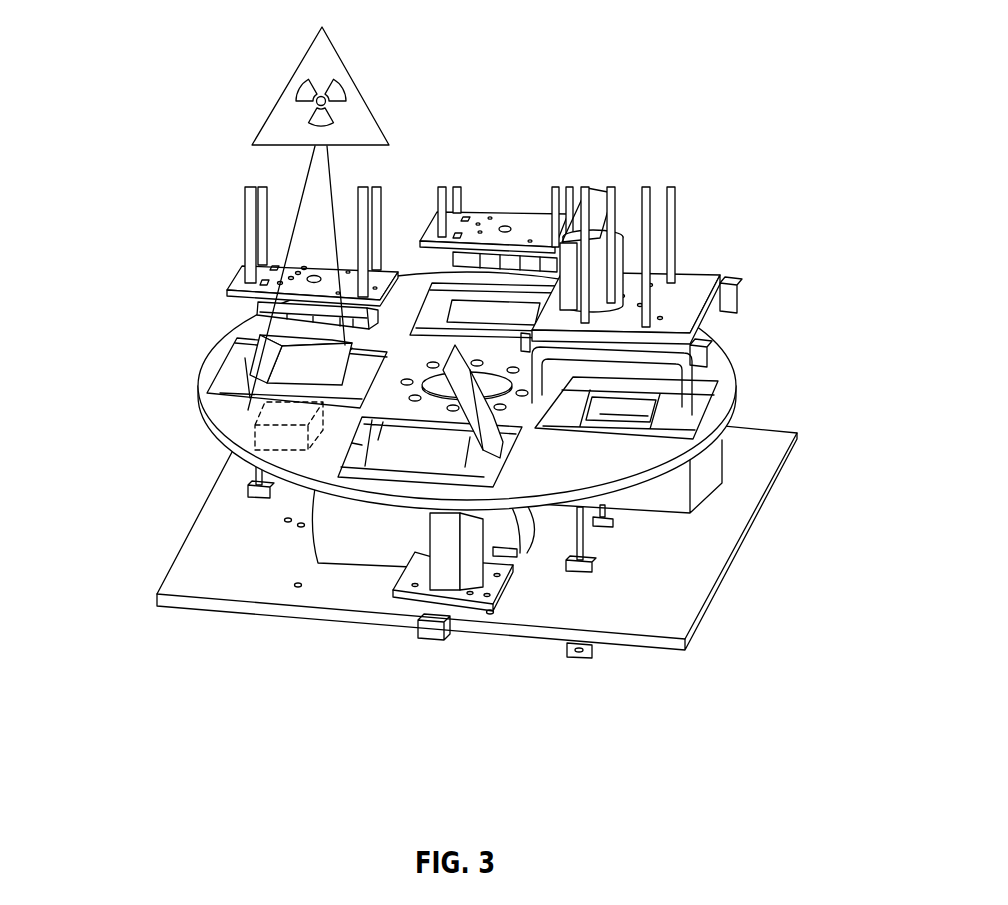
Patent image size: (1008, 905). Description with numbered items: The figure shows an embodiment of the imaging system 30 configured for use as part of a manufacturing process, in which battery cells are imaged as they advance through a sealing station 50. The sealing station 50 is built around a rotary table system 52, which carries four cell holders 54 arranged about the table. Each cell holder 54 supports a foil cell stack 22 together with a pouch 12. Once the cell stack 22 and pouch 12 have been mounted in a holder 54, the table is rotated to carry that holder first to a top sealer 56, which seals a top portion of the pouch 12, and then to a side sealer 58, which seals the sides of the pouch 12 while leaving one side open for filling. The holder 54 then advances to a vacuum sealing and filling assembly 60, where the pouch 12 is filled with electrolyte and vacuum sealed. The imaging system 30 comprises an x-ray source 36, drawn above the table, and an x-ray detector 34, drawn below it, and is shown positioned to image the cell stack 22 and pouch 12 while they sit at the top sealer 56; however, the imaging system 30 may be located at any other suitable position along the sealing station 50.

The pouch 12 is at (292, 368).
The foil cell stack 22 is at (423, 455).
The imaging system 30 is at (138, 138).
The x-ray detector 34 is at (272, 441).
The x-ray source 36 is at (287, 85).
The sealing station 50 is at (698, 123).
The rotary table system 52 is at (657, 580).
The cell holder 54 is at (535, 508).
The top sealer 56 is at (226, 291).
The side sealer 58 is at (522, 223).
The vacuum sealing and filling assembly 60 is at (682, 350).